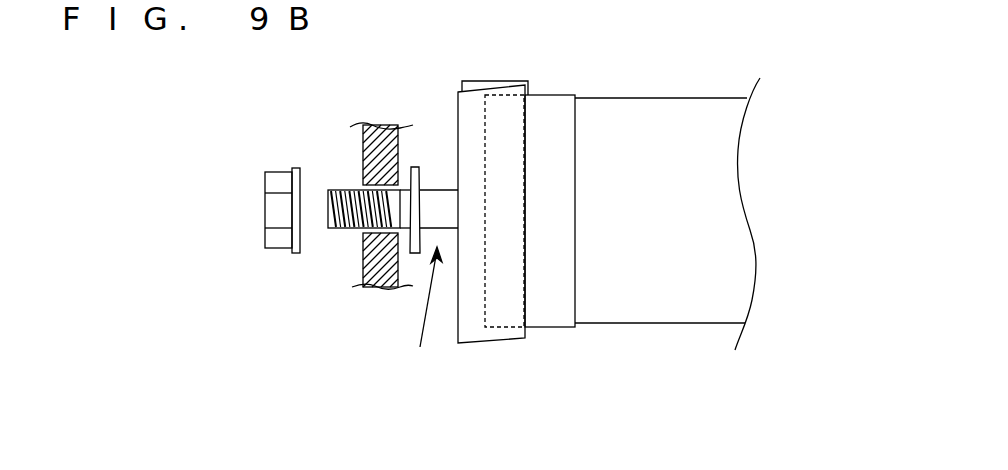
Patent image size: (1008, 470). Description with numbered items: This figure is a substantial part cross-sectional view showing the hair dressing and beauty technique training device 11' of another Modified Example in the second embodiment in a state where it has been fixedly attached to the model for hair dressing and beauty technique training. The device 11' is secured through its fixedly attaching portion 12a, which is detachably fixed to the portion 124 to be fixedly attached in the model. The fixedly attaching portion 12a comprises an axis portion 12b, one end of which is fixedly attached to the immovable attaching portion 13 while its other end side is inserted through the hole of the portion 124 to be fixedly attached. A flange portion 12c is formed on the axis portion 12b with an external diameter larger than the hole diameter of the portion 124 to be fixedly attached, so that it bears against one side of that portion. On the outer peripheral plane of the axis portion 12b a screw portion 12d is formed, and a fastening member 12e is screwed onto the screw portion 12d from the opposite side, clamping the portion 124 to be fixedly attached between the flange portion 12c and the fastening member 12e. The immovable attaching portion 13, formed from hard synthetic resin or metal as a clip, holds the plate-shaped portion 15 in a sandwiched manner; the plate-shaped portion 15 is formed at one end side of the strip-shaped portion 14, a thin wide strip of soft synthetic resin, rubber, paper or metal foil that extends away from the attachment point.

The hair dressing and beauty technique training device 11' is at (609, 221).
The fixedly attaching portion 12a is at (418, 318).
The axis portion 12b is at (440, 188).
The flange portion 12c is at (418, 175).
The screw portion 12d is at (352, 190).
The fastening member 12e is at (268, 240).
The portion to be fixedly attached 124 is at (363, 233).
The immovable attaching portion 13 is at (497, 332).
The plate-shaped portion 15 is at (548, 320).
The strip-shaped portion 14 is at (642, 315).